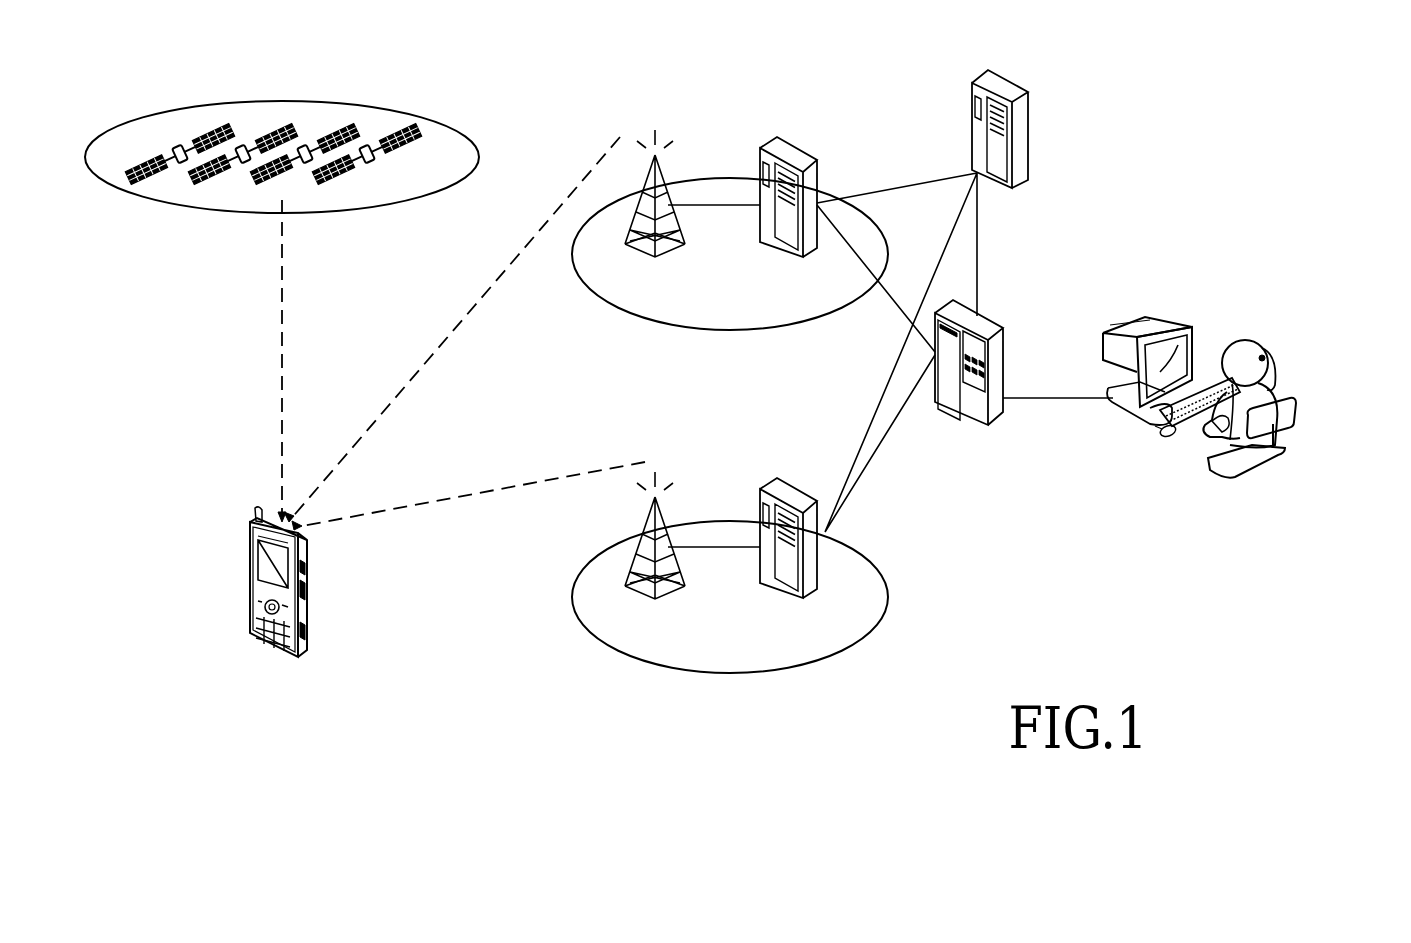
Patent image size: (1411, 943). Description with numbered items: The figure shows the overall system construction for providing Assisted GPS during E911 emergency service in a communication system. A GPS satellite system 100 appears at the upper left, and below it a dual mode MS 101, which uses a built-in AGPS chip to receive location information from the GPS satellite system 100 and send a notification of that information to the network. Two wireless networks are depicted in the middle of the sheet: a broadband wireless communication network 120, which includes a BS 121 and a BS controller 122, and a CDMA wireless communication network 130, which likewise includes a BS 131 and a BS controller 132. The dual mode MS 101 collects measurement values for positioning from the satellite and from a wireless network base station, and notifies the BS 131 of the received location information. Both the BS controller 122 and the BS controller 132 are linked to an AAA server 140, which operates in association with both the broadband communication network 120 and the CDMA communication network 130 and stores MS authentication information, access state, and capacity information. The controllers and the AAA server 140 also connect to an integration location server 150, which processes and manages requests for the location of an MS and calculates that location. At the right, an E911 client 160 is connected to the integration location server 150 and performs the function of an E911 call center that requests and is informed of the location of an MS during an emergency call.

The GPS satellite system 100 is at (282, 132).
The dual mode mobile station 101 is at (298, 614).
The broadband wireless communication network 120 is at (730, 197).
The base station 121 is at (648, 208).
The BS controller 122 is at (795, 222).
The CDMA wireless communication network 130 is at (730, 553).
The base station 131 is at (648, 550).
The BS controller 132 is at (795, 563).
The AAA server 140 is at (1044, 156).
The integration location server 150 is at (992, 401).
The E911 client 160 is at (1253, 397).